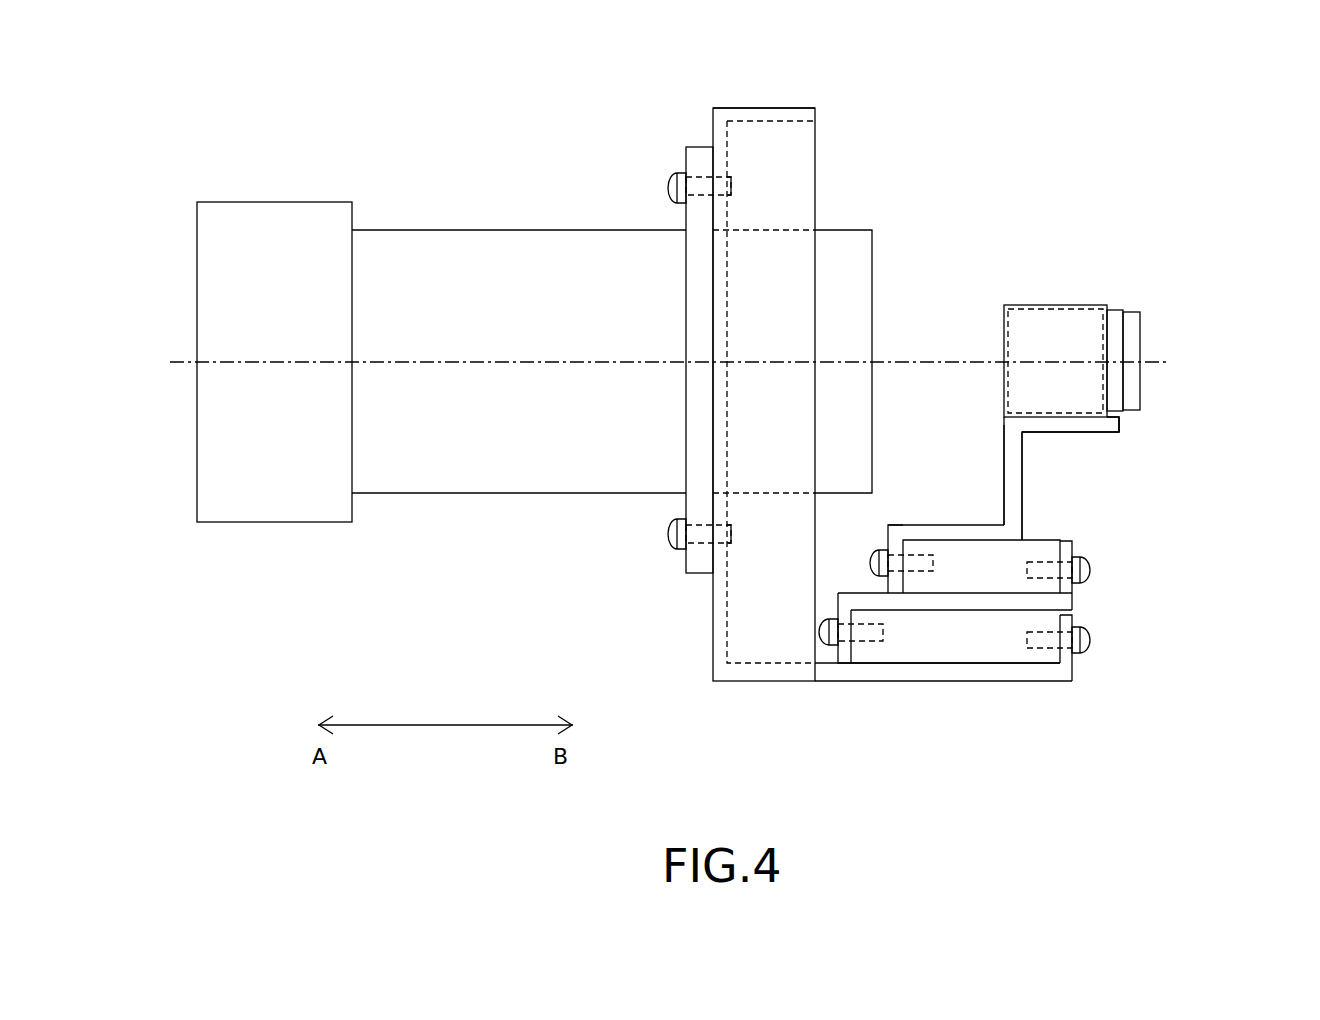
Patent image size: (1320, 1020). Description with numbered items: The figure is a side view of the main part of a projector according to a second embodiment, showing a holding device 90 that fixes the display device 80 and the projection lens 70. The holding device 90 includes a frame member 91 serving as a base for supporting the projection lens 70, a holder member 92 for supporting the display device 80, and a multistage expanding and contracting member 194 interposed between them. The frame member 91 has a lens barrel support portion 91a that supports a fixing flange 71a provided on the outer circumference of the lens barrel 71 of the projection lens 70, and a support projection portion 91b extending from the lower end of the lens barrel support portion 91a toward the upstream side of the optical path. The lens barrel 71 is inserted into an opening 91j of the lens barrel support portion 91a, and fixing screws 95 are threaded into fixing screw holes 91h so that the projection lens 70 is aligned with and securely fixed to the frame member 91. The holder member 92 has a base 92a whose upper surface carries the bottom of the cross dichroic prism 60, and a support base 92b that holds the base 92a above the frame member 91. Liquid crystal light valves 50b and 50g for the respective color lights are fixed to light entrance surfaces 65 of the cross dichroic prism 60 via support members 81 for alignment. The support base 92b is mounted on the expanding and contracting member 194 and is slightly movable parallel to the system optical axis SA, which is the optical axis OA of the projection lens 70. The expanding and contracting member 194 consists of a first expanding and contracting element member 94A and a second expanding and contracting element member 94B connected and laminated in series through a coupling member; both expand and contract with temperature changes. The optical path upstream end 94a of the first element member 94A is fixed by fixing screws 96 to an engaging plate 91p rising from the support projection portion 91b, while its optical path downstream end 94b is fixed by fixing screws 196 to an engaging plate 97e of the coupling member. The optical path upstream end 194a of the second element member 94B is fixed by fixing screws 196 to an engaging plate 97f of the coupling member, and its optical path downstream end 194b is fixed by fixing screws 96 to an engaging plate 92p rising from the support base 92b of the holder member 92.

The projection lens 70 is at (400, 180).
The lens barrel 71 is at (490, 228).
The fixing flange 71a is at (698, 146).
The display device 80 is at (1092, 262).
The support member 81 is at (1123, 418).
The cross dichroic prism 60 is at (1058, 304).
The liquid crystal light valve 50b is at (1014, 303).
The liquid crystal light valve 50g is at (1131, 310).
The light entrance surface 65 is at (1126, 385).
The holding device 90 is at (702, 690).
The frame member 91 is at (757, 695).
The lens barrel support portion 91a is at (765, 107).
The support projection portion 91b is at (884, 672).
The fixing screw hole 91h is at (735, 192).
The opening 91j is at (678, 177).
The engaging plate 91p is at (1073, 673).
The holder member 92 is at (1138, 493).
The base 92a is at (1064, 426).
The support base 92b is at (1013, 447).
The engaging plate 92p is at (898, 537).
The first expanding and contracting element member 94A is at (988, 650).
The optical path upstream end 94a is at (1042, 655).
The second expanding and contracting element member 94B is at (975, 558).
The optical path downstream end 94b is at (863, 617).
The fixing screw 95 is at (666, 190).
The fixing screw 96 is at (884, 548).
The fixing screw 196 is at (822, 632).
The multistage expanding and contracting member 194 is at (1116, 619).
The optical path upstream end 194a is at (1047, 550).
The optical path downstream end 194b is at (922, 580).
The engaging plate 97e is at (847, 665).
The engaging plate 97f is at (1075, 602).
The system optical axis SA is at (892, 366).
The optical axis OA is at (450, 363).